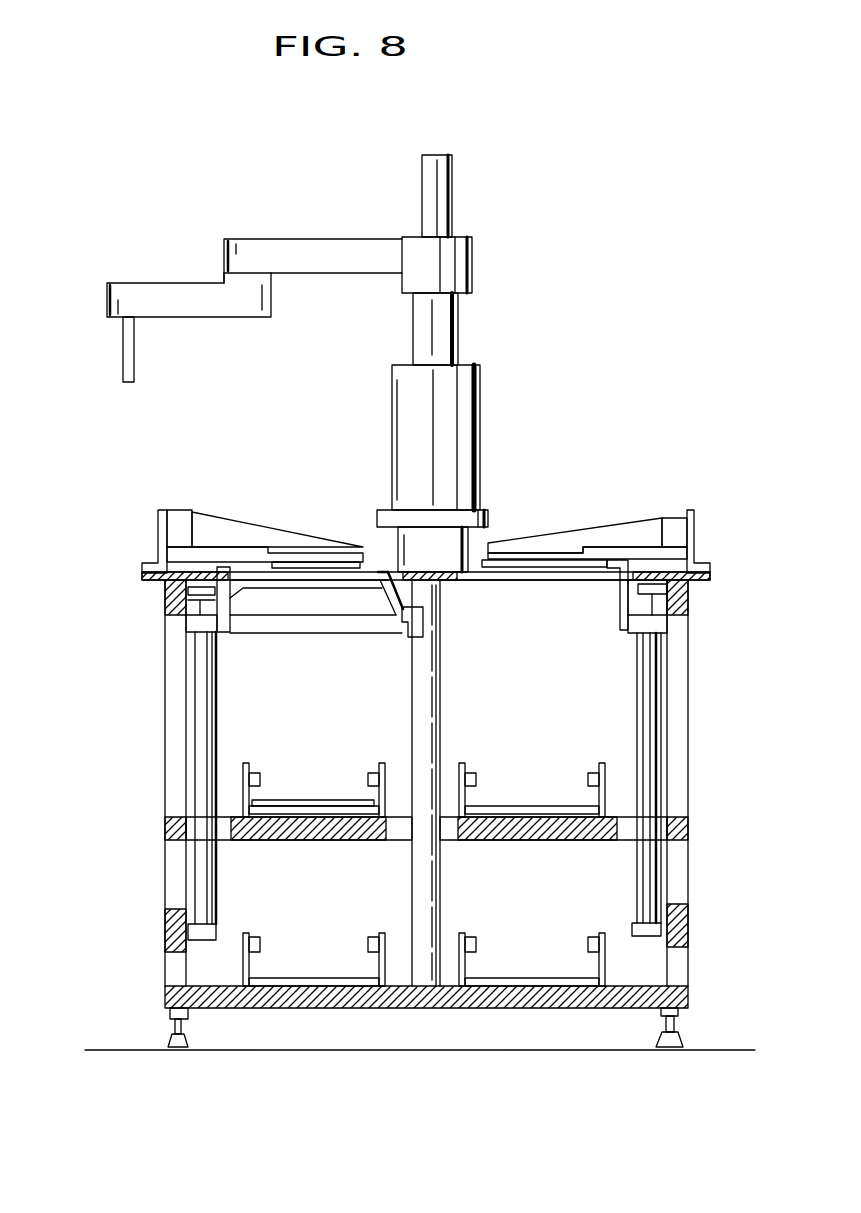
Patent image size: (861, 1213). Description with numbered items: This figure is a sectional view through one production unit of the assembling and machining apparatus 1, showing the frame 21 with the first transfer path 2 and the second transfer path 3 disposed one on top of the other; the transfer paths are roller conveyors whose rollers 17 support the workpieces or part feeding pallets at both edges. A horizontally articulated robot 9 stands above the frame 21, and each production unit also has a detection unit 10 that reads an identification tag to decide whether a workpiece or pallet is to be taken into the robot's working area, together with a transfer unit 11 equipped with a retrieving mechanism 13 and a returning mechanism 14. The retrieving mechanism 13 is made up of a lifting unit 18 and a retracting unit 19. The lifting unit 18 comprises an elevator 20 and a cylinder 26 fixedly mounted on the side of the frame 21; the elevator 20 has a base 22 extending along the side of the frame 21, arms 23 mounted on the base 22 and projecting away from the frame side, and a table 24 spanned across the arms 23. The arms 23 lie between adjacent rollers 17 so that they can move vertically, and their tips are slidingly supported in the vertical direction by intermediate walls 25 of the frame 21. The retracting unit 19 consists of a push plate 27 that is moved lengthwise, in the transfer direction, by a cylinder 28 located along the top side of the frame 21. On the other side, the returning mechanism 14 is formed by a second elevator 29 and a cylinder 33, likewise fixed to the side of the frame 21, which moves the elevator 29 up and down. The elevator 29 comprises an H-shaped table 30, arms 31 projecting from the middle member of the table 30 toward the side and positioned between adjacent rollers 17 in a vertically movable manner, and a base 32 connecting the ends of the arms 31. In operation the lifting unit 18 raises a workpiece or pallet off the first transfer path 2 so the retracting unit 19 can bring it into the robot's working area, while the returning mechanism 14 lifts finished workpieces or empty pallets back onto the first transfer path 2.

The assembling and machining apparatus 1 is at (607, 203).
The robot 9 is at (473, 265).
The retrieving mechanism 13 is at (82, 502).
The retracting unit 19 is at (157, 530).
The cylinder 28 is at (177, 512).
The push plate 27 is at (237, 526).
The transfer unit 11 is at (256, 555).
The elevator 29 is at (595, 557).
The table 24 is at (313, 562).
The H-shaped table 30 is at (533, 557).
The arms 31 is at (607, 573).
The frame 21 is at (688, 710).
The lifting unit 18 is at (213, 592).
The returning mechanism 14 is at (688, 585).
The cylinder 26 is at (203, 702).
The cylinder 33 is at (645, 665).
The base 22 is at (222, 566).
The elevator 20 is at (377, 560).
The arms 23 is at (408, 623).
The base 32 is at (620, 597).
The intermediate walls 25 is at (431, 695).
The rollers 17 is at (249, 773).
The first transfer path 2 is at (384, 765).
The second transfer path 3 is at (386, 935).
The detection unit 10 is at (296, 800).